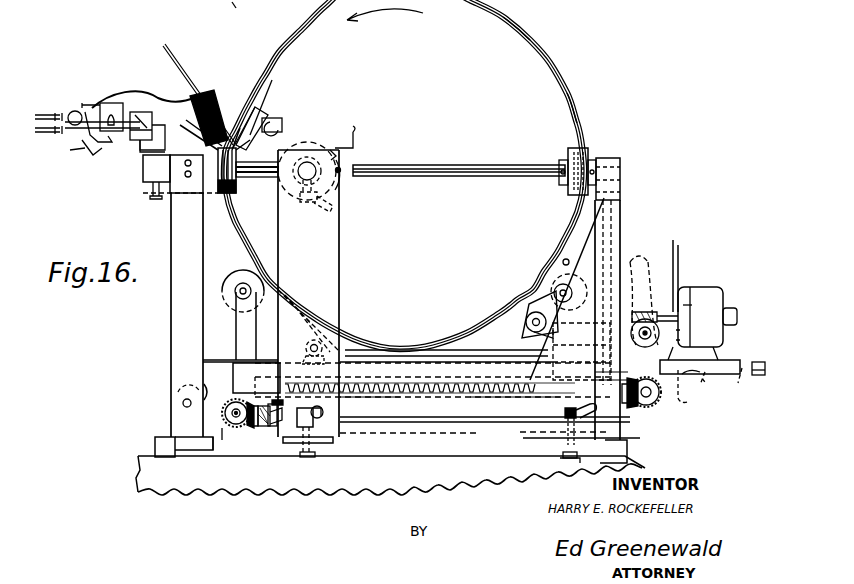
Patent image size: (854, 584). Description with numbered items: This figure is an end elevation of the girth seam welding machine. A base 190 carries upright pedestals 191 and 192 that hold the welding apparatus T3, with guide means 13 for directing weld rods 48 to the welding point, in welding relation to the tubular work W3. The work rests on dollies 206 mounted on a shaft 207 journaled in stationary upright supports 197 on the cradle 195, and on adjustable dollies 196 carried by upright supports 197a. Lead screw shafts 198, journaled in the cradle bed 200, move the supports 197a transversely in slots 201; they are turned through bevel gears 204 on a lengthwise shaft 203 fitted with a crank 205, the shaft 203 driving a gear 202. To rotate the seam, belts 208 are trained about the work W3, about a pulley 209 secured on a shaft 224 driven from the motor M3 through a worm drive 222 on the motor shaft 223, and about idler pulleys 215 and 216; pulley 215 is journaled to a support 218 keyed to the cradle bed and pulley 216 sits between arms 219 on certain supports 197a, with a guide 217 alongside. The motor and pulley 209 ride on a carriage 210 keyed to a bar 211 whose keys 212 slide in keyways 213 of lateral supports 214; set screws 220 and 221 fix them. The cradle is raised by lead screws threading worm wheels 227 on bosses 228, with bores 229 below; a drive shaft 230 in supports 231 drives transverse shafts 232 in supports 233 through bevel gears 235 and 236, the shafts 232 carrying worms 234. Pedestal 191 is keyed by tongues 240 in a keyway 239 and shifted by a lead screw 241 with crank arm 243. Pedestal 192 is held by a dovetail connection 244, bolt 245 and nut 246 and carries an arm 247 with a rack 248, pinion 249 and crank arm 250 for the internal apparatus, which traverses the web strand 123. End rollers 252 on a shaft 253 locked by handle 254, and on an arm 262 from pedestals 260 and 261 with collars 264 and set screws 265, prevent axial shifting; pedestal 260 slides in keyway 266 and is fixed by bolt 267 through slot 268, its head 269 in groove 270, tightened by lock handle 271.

The guide means 13 is at (203, 100).
The guide rod 48 is at (172, 52).
The welding apparatus T3 is at (88, 132).
The work W3 is at (512, 30).
The motor M3 is at (724, 296).
The web strand 123 is at (562, 100).
The base 190 is at (144, 454).
The pedestal 191 is at (182, 355).
The pedestal 192 is at (286, 296).
The cradle 195 is at (421, 404).
The dollies 196 is at (565, 258).
The upright supports 197 is at (225, 326).
The upright supports 197a is at (548, 280).
The lead screw shafts 198 is at (366, 393).
The cradle bed 200 is at (490, 393).
The slots 201 is at (421, 370).
The gear 202 is at (640, 404).
The shaft 203 is at (658, 398).
The bevel gears 204 is at (625, 376).
The crank 205 is at (650, 408).
The dollies 206 is at (232, 276).
The shaft 207 is at (243, 291).
The belts 208 is at (560, 63).
The pulley 209 is at (632, 276).
The carriage 210 is at (712, 358).
The bar 211 is at (705, 368).
The keys 212 is at (680, 395).
The keyways 213 is at (743, 385).
The supports 214 is at (760, 378).
The idler pulley 215 is at (325, 342).
The idler pulley 216 is at (540, 292).
The rod 217 is at (673, 262).
The support 218 is at (330, 325).
The arms 219 is at (532, 312).
The set screw 220 is at (687, 305).
The set screw 221 is at (680, 346).
The worm drive 222 is at (645, 318).
The motor shaft 223 is at (678, 250).
The shaft 224 is at (634, 290).
The worm wheels 227 is at (280, 428).
The bosses 228 is at (275, 428).
The bores 229 is at (248, 6).
The drive shaft 230 is at (222, 409).
The supports 231 is at (232, 428).
The shafts 232 is at (433, 426).
The supports 233 is at (186, 0).
The worms 234 is at (520, 397).
The bevel gear 235 is at (228, 417).
The bevel gear 236 is at (260, 428).
The keyway 239 is at (222, 440).
The lateral tongues 240 is at (215, 440).
The lead screw 241 is at (178, 398).
The crank arm 243 is at (210, 384).
The dovetail connection 244 is at (339, 441).
The bolt 245 is at (307, 457).
The nut 246 is at (298, 427).
The arm 247 is at (306, 165).
The rack 248 is at (328, 160).
The pinion 249 is at (340, 170).
The crank arm 250 is at (352, 140).
The rollers 252 is at (220, 192).
The shaft 253 is at (264, 180).
The lock handle 254 is at (322, 210).
The pedestal 260 is at (622, 208).
The pedestal 261 is at (610, 190).
The arm 262 is at (468, 177).
The collars 264 is at (563, 160).
The set screws 265 is at (572, 198).
The keyway 266 is at (630, 449).
The bolt 267 is at (520, 432).
The slot 268 is at (622, 432).
The head 269 is at (563, 461).
The groove 270 is at (560, 456).
The lock handle 271 is at (562, 414).